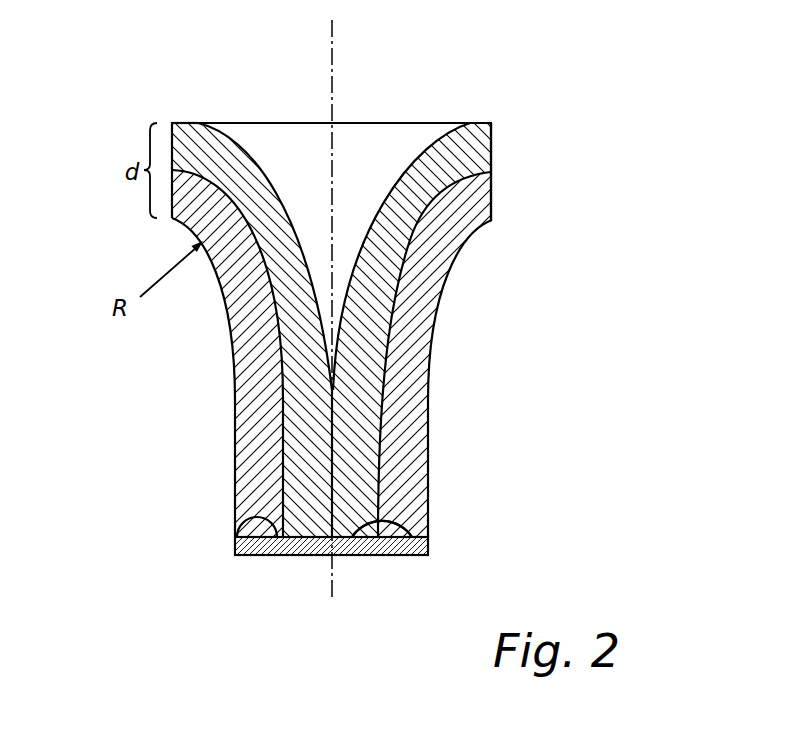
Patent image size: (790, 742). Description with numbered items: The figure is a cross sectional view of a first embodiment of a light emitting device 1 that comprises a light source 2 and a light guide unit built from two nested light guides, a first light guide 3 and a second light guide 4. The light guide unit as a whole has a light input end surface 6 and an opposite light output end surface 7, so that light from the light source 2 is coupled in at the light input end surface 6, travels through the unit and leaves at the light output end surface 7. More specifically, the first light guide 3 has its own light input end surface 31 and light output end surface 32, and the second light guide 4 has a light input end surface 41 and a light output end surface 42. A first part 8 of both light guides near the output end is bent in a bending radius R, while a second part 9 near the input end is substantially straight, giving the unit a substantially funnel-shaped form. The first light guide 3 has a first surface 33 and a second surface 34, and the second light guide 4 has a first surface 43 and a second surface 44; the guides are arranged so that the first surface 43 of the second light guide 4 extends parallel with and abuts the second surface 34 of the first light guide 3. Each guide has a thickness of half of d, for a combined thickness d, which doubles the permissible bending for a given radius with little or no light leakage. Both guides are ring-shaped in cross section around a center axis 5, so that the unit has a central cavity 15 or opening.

The light emitting device 1 is at (603, 246).
The light source 2 is at (307, 547).
The first light guide 3 is at (408, 464).
The second light guide 4 is at (353, 387).
The center axis 5 is at (333, 66).
The light input end surface 6 is at (272, 536).
The light output end surface 7 is at (170, 163).
The first part 8 is at (255, 193).
The second part 9 is at (268, 423).
The central cavity 15 is at (313, 147).
The light input end surface of the first light guide 31 is at (413, 532).
The light output end surface of the first light guide 32 is at (493, 195).
The first surface of the first light guide 33 is at (436, 318).
The second surface of the first light guide 34 is at (398, 272).
The light input end surface of the second light guide 41 is at (401, 526).
The light output end surface of the second light guide 42 is at (494, 145).
The first surface of the second light guide 43 is at (414, 222).
The second surface of the second light guide 44 is at (388, 172).